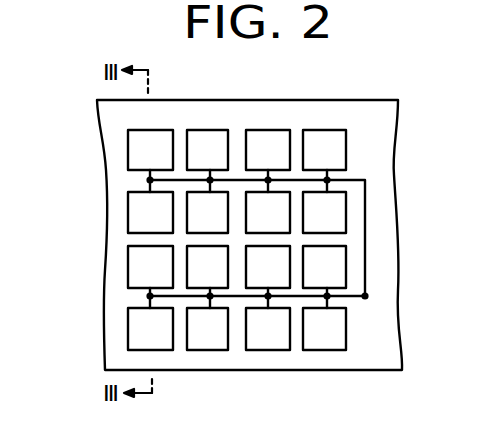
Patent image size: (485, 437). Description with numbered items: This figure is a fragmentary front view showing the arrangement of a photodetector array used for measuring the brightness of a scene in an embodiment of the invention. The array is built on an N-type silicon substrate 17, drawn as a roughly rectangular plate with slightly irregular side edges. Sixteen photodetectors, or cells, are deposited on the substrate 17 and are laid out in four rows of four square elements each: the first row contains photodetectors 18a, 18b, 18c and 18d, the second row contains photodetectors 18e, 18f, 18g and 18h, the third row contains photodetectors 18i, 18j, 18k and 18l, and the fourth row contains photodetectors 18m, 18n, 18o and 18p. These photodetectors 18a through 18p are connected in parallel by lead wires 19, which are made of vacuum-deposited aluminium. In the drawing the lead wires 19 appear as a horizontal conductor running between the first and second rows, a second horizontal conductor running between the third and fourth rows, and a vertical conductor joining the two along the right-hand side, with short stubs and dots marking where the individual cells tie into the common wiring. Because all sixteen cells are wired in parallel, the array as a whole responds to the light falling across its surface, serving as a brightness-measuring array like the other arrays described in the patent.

The N-type silicon substrate 17 is at (380, 334).
The lead wires 19 is at (365, 240).
The photodetector 18a is at (155, 138).
The photodetector 18b is at (207, 136).
The photodetector 18c is at (268, 138).
The photodetector 18d is at (325, 138).
The photodetector 18e is at (143, 203).
The photodetector 18f is at (195, 208).
The photodetector 18g is at (272, 203).
The photodetector 18h is at (327, 218).
The photodetector 18i is at (143, 257).
The photodetector 18j is at (195, 265).
The photodetector 18k is at (280, 260).
The photodetector 18l is at (327, 275).
The photodetector 18m is at (143, 321).
The photodetector 18n is at (207, 338).
The photodetector 18o is at (270, 333).
The photodetector 18p is at (325, 338).